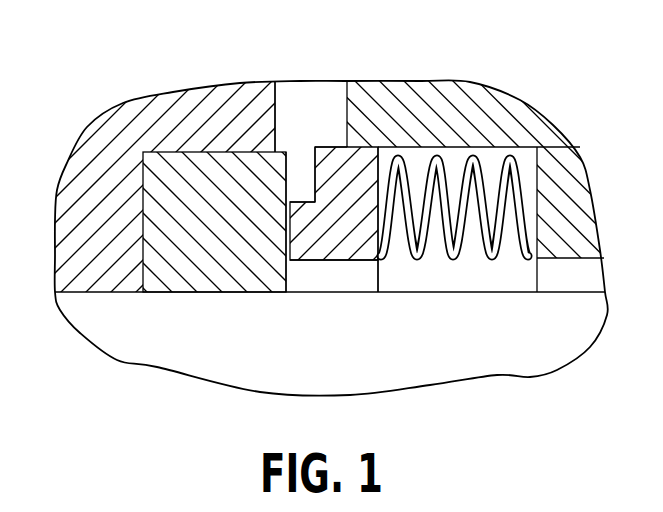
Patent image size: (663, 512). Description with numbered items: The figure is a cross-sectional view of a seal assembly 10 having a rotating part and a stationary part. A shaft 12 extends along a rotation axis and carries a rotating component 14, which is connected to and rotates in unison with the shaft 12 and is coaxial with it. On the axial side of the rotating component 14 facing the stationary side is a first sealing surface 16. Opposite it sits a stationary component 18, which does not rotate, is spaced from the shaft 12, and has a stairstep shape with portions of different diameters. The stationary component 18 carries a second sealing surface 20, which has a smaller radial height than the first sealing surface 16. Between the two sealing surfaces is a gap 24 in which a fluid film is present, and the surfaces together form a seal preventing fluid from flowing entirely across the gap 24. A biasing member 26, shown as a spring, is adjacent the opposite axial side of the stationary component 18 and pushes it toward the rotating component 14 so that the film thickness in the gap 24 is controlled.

The seal assembly 10 is at (109, 73).
The shaft 12 is at (503, 363).
The rotating component 14 is at (197, 282).
The first sealing surface 16 is at (299, 295).
The stationary component 18 is at (354, 259).
The second sealing surface 20 is at (306, 240).
The gap 24 is at (292, 178).
The biasing member 26 is at (452, 258).